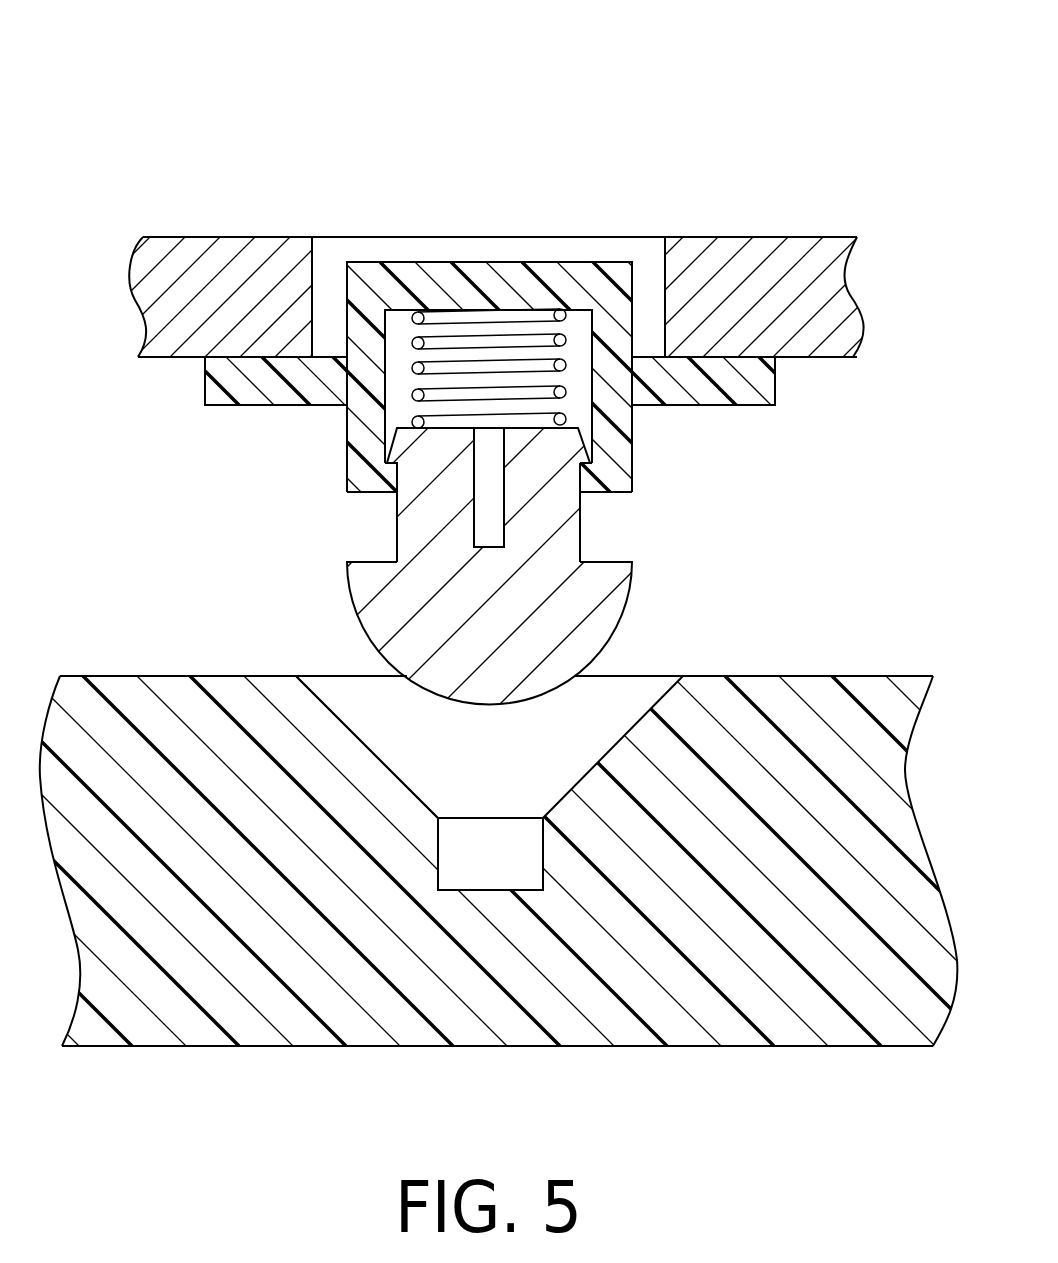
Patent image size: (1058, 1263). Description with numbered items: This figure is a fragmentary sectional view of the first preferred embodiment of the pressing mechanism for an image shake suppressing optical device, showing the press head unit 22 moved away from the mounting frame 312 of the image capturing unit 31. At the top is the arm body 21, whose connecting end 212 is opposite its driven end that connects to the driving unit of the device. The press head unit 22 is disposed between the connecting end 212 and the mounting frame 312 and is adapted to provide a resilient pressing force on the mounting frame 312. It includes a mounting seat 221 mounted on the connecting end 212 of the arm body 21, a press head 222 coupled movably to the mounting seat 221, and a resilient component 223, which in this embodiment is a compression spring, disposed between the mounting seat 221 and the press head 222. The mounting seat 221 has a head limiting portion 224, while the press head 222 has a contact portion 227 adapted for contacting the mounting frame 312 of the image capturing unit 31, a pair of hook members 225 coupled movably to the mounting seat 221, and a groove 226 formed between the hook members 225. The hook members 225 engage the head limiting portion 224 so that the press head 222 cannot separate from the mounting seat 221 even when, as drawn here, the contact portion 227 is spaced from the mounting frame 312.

The arm body 21 is at (197, 237).
The connecting end 212 is at (277, 237).
The press head unit 22 is at (713, 92).
The mounting seat 221 is at (520, 287).
The press head 222 is at (582, 535).
The resilient component 223 is at (561, 340).
The head limiting portion 224 is at (398, 485).
The hook members 225 is at (375, 452).
The groove 226 is at (490, 526).
The contact portion 227 is at (578, 617).
The image capturing unit 31 is at (848, 1062).
The mounting frame 312 is at (862, 676).